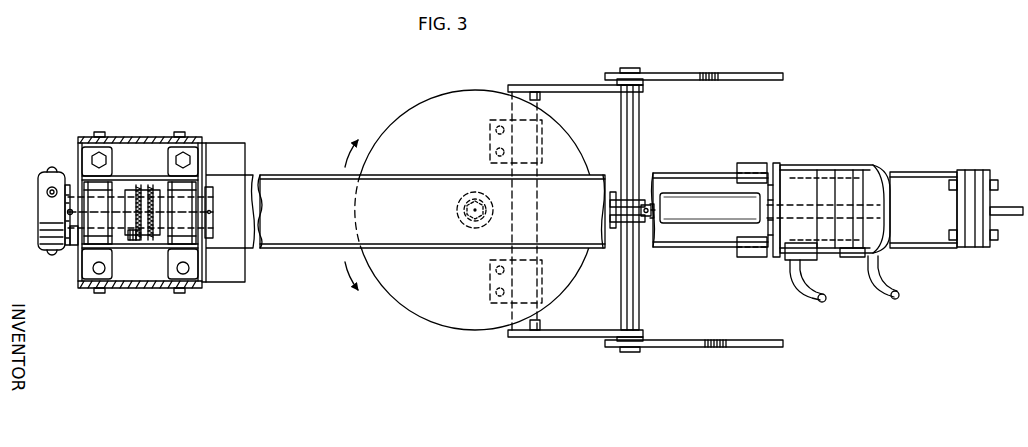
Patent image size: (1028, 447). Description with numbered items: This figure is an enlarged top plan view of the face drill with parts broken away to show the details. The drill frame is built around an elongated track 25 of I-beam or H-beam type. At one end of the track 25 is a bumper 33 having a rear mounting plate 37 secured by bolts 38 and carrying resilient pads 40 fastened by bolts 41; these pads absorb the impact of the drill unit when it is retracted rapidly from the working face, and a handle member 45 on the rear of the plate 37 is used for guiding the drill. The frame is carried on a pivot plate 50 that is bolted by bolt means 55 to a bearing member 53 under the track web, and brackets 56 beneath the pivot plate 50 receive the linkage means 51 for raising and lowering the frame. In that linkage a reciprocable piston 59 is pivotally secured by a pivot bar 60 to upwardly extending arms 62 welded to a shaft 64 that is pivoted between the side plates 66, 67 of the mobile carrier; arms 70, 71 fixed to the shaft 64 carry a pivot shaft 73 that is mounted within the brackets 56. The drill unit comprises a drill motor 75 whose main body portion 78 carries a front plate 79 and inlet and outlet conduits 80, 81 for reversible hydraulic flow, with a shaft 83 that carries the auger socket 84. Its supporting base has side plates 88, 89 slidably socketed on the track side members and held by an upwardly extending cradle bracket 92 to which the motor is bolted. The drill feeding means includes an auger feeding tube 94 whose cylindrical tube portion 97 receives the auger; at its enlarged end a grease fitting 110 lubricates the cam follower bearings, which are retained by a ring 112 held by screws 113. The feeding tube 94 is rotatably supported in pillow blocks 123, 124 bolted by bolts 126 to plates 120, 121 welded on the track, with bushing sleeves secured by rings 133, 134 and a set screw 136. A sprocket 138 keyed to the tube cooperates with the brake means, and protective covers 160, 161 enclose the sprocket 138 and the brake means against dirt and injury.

The elongated track 25 is at (296, 185).
The bumper 33 is at (968, 165).
The rear mounting plate 37 is at (982, 216).
The bolts 38 is at (994, 180).
The resilient pads 40 is at (973, 170).
The bolts 41 is at (950, 234).
The handle member 45 is at (1012, 216).
The pivot plate 50 is at (410, 297).
The linkage means 51 is at (590, 78).
The bearing member 53 is at (458, 205).
The bolt means 55 is at (462, 215).
The brackets 56 is at (490, 130).
The reciprocable piston 59 is at (653, 220).
The pivot bar 60 is at (612, 198).
The upwardly extending arms 62 is at (612, 222).
The shaft 64 is at (636, 305).
The side plate 66 is at (721, 76).
The side plate 67 is at (722, 348).
The arm 70 is at (553, 85).
The arm 71 is at (556, 338).
The pivot shaft 73 is at (541, 326).
The drill motor 75 is at (800, 160).
The main body portion 78 is at (853, 258).
The front plate 79 is at (786, 260).
The inlet conduit 80 is at (805, 290).
The outlet conduit 81 is at (882, 293).
The shaft 83 is at (769, 212).
The auger socket 84 is at (700, 200).
The side plate 88 is at (748, 165).
The side plate 89 is at (750, 250).
The cradle bracket 92 is at (776, 165).
The auger feeding tube 94 is at (60, 247).
The cylindrical tube portion 97 is at (162, 202).
The grease fitting 110 is at (48, 189).
The ring 112 is at (45, 205).
The screws 113 is at (52, 167).
The plate 120 is at (113, 158).
The plate 121 is at (200, 156).
The pillow block 123 is at (95, 150).
The pillow block 124 is at (188, 152).
The bolts 126 is at (98, 273).
The ring 133 is at (73, 246).
The ring 134 is at (211, 193).
The set screw 136 is at (68, 214).
The sprocket 138 is at (131, 240).
The protective cover 160 is at (143, 137).
The protective cover 161 is at (236, 270).